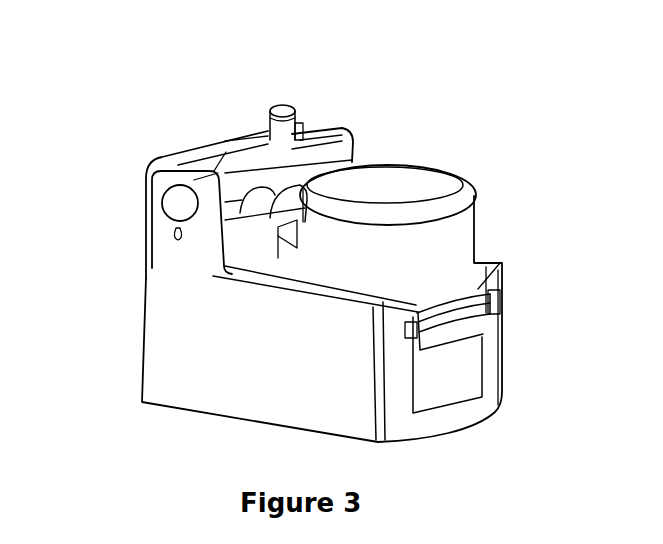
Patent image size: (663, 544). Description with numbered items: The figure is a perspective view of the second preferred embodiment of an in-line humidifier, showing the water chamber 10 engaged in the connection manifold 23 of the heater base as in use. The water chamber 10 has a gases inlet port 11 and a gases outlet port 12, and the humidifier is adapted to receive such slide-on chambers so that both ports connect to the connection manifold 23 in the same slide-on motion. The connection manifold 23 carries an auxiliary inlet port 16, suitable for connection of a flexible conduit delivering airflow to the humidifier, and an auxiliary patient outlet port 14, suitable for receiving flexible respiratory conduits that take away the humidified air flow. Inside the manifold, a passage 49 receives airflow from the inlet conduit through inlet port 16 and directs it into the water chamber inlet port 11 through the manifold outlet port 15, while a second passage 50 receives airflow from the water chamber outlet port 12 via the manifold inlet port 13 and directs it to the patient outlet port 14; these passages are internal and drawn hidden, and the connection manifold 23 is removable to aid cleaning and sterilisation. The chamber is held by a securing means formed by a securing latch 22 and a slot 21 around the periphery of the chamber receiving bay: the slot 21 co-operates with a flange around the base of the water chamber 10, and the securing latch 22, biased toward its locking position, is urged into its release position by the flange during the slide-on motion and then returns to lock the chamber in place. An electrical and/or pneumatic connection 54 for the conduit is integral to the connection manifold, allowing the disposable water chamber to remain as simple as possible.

The water chamber 10 is at (452, 242).
The gases inlet port 11 is at (285, 213).
The gases outlet port 12 is at (372, 168).
The manifold inlet port 13 is at (312, 190).
The auxiliary patient outlet port 14 is at (281, 108).
The manifold outlet port 15 is at (257, 211).
The auxiliary inlet port 16 is at (163, 200).
The slot 21 is at (503, 302).
The securing latch 22 is at (462, 328).
The connection manifold 23 is at (228, 152).
The passage 49 is at (195, 182).
The passage 50 is at (343, 133).
The electrical and/or pneumatic connection 54 is at (303, 123).